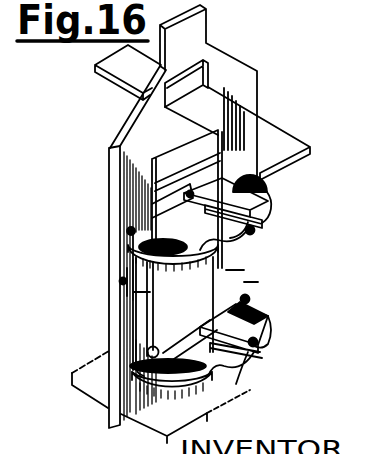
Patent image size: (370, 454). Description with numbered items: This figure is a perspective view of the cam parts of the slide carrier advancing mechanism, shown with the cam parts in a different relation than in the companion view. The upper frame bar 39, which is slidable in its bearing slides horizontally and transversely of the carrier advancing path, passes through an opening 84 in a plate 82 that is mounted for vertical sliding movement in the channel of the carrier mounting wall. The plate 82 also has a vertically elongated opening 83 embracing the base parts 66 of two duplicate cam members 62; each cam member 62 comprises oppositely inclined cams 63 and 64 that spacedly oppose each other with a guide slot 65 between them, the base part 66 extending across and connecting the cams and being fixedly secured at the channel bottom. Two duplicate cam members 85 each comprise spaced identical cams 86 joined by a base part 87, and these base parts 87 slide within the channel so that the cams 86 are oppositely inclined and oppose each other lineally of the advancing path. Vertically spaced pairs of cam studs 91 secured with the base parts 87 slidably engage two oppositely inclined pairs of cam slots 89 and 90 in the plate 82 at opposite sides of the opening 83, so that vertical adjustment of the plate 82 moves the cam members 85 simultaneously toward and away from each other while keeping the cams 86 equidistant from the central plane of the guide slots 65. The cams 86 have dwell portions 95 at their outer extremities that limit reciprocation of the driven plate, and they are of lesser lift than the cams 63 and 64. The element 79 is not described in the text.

The frame bar 39 is at (158, 430).
The cam member 62 is at (161, 200).
The cam 63 is at (135, 257).
The cam 64 is at (266, 205).
The guide slot 65 is at (206, 334).
The base part 66 is at (187, 199).
The horizontal board 79 is at (310, 146).
The plate 82 is at (227, 61).
The opening 83 is at (183, 132).
The opening 84 is at (172, 114).
The cam member 85 is at (258, 268).
The cam 86 is at (255, 250).
The base part 87 is at (252, 282).
The cam slot 89 is at (127, 233).
The cam slot 90 is at (246, 134).
The cam stud 91 is at (120, 279).
The dwell portion 95 is at (252, 231).